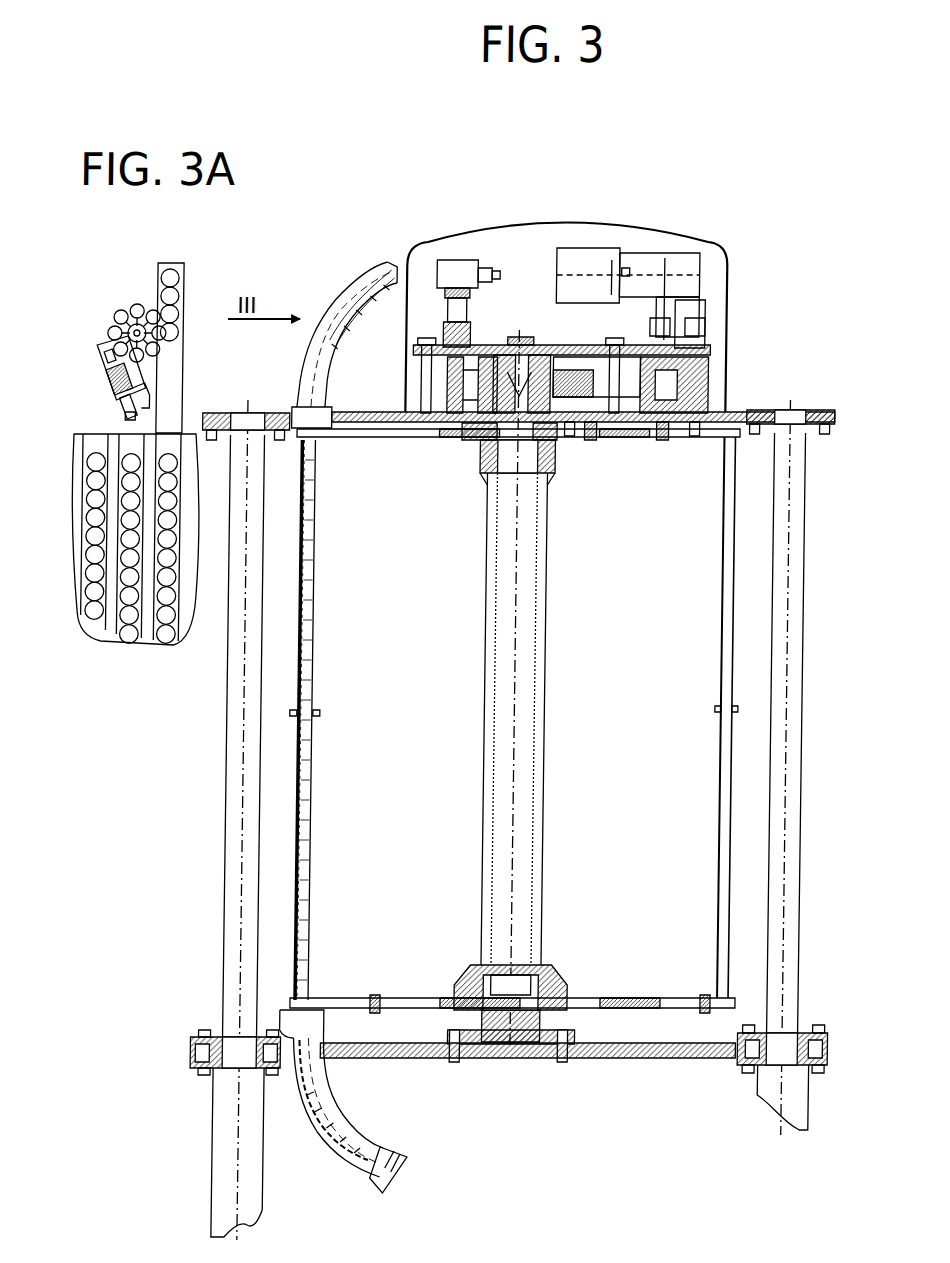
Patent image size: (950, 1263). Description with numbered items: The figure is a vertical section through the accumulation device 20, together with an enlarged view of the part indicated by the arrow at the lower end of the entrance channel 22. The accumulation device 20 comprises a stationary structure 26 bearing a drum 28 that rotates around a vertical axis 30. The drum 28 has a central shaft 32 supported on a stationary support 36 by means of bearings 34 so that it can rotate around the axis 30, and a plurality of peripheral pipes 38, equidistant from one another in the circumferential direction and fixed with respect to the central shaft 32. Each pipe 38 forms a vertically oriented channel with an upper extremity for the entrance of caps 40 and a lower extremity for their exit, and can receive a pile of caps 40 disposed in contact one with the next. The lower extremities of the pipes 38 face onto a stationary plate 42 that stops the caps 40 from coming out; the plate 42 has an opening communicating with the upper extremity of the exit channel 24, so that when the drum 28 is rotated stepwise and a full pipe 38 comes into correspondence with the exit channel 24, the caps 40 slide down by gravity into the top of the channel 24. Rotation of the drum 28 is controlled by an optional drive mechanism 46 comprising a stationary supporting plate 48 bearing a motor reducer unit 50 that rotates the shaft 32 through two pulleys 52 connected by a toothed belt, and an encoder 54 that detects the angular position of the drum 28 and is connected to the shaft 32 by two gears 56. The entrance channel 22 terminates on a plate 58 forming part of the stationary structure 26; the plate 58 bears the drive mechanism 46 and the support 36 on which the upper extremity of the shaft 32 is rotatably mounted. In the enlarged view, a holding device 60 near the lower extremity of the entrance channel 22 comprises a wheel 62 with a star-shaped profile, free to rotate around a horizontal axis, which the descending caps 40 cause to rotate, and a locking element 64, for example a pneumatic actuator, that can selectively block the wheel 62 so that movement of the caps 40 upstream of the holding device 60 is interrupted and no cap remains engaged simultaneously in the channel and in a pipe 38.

In FIG. 3, the accumulation device 20 is at (776, 305).
In FIG. 3, the entrance channel 22 is at (389, 262).
In FIG. 3A, the entrance channel 22 is at (178, 375).
In FIG. 3, the exit channel 24 is at (351, 1150).
In FIG. 3, the stationary structure 26 is at (806, 982).
In FIG. 3, the drum 28 is at (736, 682).
In FIG. 3, the vertical axis 30 is at (519, 742).
In FIG. 3, the central shaft 32 is at (546, 840).
In FIG. 3, the bearings 34 is at (550, 455).
In FIG. 3, the stationary support 36 is at (494, 500).
In FIG. 3, the peripheral pipes 38 is at (299, 815).
In FIG. 3A, the peripheral pipes 38 is at (77, 495).
In FIG. 3, the caps 40 is at (385, 270).
In FIG. 3A, the caps 40 is at (174, 332).
In FIG. 3, the stationary plate 42 is at (718, 1010).
In FIG. 3, the drive mechanism 46 is at (726, 262).
In FIG. 3, the stationary supporting plate 48 is at (552, 345).
In FIG. 3, the motor reducer unit 50 is at (652, 263).
In FIG. 3, the pulleys 52 is at (582, 440).
In FIG. 3, the encoder 54 is at (442, 270).
In FIG. 3, the gears 56 is at (473, 420).
In FIG. 3, the plate 58 is at (351, 412).
In FIG. 3A, the holding device 60 is at (98, 298).
In FIG. 3A, the wheel 62 is at (122, 320).
In FIG. 3A, the locking element 64 is at (108, 392).